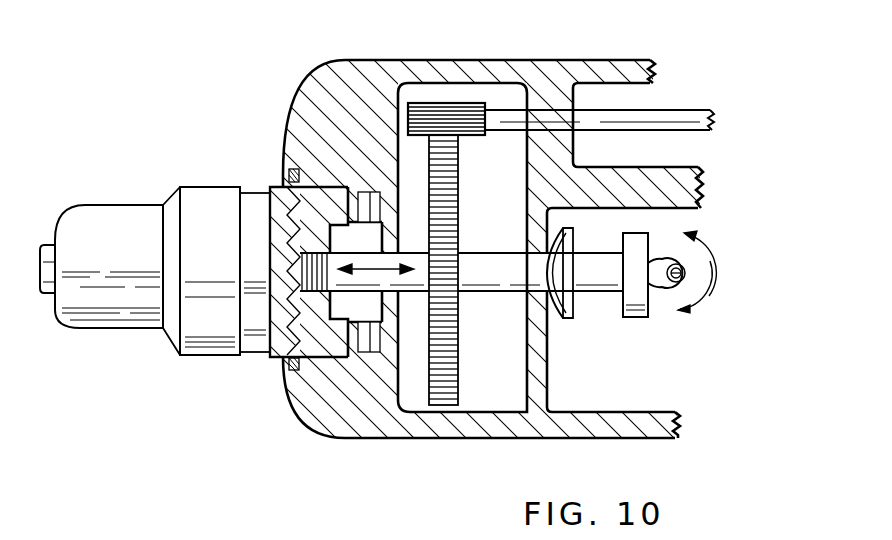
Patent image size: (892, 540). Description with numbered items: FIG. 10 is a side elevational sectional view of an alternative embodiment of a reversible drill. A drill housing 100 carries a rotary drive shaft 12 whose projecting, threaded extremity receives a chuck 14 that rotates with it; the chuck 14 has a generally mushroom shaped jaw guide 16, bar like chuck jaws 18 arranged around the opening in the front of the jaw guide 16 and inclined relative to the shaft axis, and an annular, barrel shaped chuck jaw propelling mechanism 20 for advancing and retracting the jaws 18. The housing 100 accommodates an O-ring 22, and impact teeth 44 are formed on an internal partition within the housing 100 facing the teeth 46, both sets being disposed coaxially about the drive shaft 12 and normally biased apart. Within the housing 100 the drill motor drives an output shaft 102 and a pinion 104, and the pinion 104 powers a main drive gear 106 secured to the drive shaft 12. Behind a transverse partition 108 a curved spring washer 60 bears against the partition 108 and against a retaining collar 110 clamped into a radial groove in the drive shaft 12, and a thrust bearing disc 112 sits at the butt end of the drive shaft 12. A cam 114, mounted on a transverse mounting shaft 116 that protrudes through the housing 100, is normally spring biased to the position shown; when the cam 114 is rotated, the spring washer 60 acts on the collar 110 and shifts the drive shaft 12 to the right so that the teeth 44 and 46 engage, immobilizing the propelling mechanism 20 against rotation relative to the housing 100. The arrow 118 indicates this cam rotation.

The drive shaft 12 is at (474, 259).
The chuck 14 is at (250, 359).
The jaw guide 16 is at (128, 318).
The chuck jaws 18 is at (43, 252).
The chuck jaw propelling mechanism 20 is at (280, 357).
The O-ring 22 is at (290, 169).
The impact teeth 44 is at (364, 200).
The teeth 46 is at (344, 338).
The curved spring washer 60 is at (557, 316).
The drill housing 100 is at (567, 62).
The output shaft 102 is at (680, 132).
The pinion 104 is at (445, 108).
The main drive gear 106 is at (460, 153).
The transverse partition 108 is at (548, 372).
The retaining collar 110 is at (586, 269).
The thrust bearing disc 112 is at (637, 318).
The cam 114 is at (669, 291).
The transverse mounting shaft 116 is at (690, 267).
The rotation arrow 118 is at (692, 284).